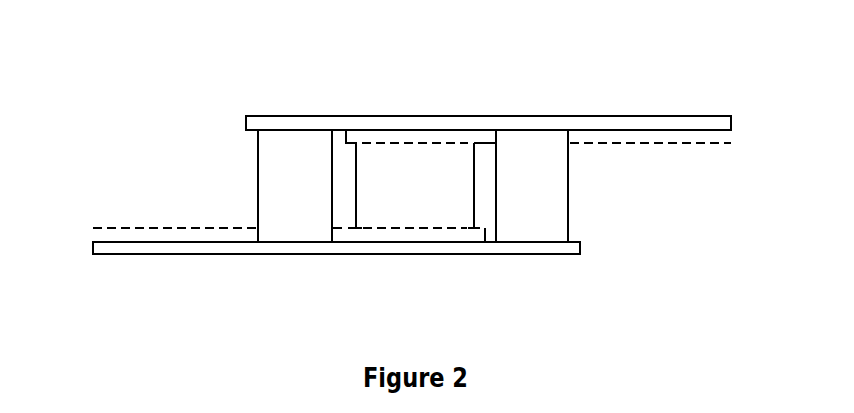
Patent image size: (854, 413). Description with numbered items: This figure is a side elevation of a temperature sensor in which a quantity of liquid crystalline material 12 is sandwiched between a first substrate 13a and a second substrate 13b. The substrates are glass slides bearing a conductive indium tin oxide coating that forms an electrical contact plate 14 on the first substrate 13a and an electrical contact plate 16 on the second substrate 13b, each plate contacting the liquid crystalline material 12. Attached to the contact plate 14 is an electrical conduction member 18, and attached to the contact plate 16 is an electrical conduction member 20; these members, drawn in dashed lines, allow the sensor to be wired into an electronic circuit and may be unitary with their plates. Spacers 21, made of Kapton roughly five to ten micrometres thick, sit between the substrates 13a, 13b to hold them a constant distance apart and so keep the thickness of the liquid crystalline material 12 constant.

The liquid crystalline material 12 is at (413, 182).
The first substrate 13a is at (657, 125).
The second substrate 13b is at (182, 250).
The electrical contact plate 14 is at (377, 135).
The electrical contact plate 16 is at (419, 232).
The electrical conduction member 18 is at (658, 135).
The electrical conduction member 20 is at (130, 233).
The spacer 21 is at (297, 167).